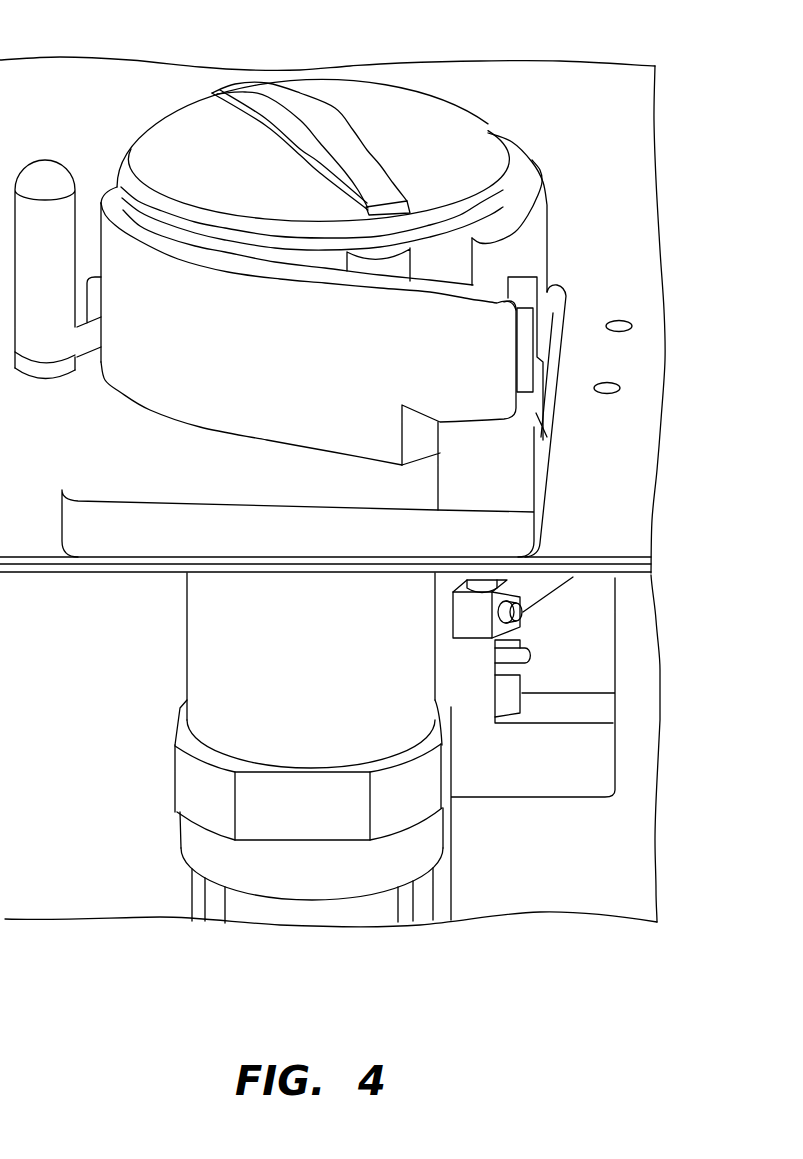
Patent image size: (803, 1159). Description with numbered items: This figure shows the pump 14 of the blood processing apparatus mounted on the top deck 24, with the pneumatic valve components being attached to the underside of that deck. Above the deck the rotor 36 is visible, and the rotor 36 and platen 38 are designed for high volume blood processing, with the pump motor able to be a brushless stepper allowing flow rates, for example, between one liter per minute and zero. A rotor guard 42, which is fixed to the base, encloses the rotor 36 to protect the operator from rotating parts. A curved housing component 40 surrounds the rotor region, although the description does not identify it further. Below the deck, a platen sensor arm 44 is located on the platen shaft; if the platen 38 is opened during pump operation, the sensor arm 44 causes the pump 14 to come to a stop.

The pump assembly 14 is at (467, 88).
The top deck 24 is at (630, 465).
The rotor 36 is at (162, 124).
The platen 38 is at (190, 634).
The housing 40 is at (147, 397).
The rotor guard 42 is at (540, 187).
The platen sensor arm 44 is at (467, 630).